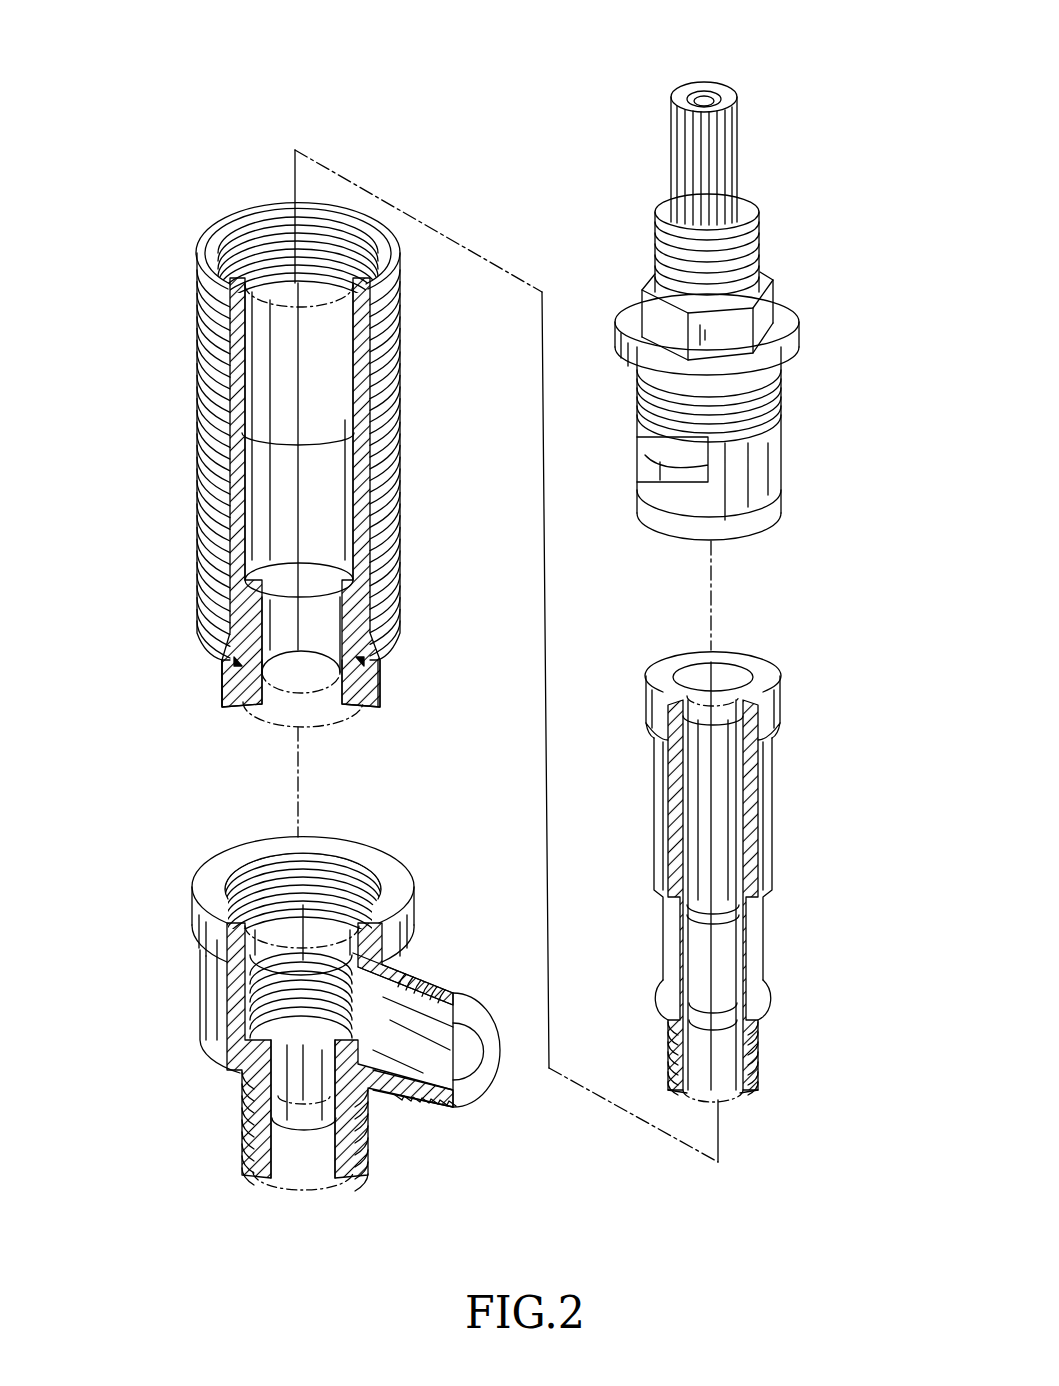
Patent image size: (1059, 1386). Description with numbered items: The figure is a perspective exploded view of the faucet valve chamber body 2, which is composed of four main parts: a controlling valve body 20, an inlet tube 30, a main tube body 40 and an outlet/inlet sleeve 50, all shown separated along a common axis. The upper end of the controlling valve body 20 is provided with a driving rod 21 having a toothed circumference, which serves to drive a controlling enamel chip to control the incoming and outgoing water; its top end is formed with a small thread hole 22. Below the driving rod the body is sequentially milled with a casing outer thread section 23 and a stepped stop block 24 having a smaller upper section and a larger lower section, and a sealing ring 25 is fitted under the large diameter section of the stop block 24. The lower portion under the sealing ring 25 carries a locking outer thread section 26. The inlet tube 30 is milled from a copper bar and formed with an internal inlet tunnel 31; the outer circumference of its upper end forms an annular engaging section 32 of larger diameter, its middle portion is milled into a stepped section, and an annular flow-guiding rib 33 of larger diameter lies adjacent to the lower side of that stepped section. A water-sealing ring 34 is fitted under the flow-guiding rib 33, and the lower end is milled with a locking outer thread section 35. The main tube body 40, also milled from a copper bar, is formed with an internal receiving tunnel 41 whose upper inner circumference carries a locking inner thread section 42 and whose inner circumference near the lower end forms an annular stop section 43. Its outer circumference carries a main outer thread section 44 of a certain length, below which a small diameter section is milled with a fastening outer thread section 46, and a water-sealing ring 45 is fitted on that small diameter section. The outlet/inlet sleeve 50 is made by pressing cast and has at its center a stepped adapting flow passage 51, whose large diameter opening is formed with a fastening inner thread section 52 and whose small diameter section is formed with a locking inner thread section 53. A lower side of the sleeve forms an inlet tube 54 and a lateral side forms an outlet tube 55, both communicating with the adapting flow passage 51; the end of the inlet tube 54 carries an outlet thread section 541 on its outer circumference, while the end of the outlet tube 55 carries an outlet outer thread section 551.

The valve chamber body 2 is at (446, 56).
The controlling valve body 20 is at (644, 540).
The driving rod 21 is at (690, 155).
The small thread hole 22 is at (706, 95).
The casing outer thread section 23 is at (758, 259).
The stepped stop block 24 is at (650, 305).
The sealing ring 25 is at (790, 352).
The locking outer thread section 26 is at (741, 426).
The inlet tube 30 is at (630, 820).
The internal inlet tunnel 31 is at (718, 850).
The annular engaging section 32 is at (765, 682).
The annular flow-guiding rib 33 is at (663, 998).
The water-sealing ring 34 is at (762, 1040).
The locking outer thread section 35 is at (760, 1083).
The main tube body 40 is at (153, 449).
The internal receiving tunnel 41 is at (313, 402).
The locking inner thread section 42 is at (263, 247).
The annular stop section 43 is at (380, 632).
The main outer thread section 44 is at (206, 512).
The water-sealing ring 45 is at (377, 680).
The fastening outer thread section 46 is at (232, 689).
The outlet/inlet sleeve 50 is at (166, 1024).
The stepped adapting flow passage 51 is at (228, 900).
The fastening inner thread section 52 is at (355, 890).
The locking inner thread section 53 is at (275, 1015).
The inlet tube 54 is at (272, 1176).
The outlet thread section 541 is at (368, 1164).
The outlet tube 55 is at (477, 1093).
The outlet outer thread section 551 is at (452, 985).